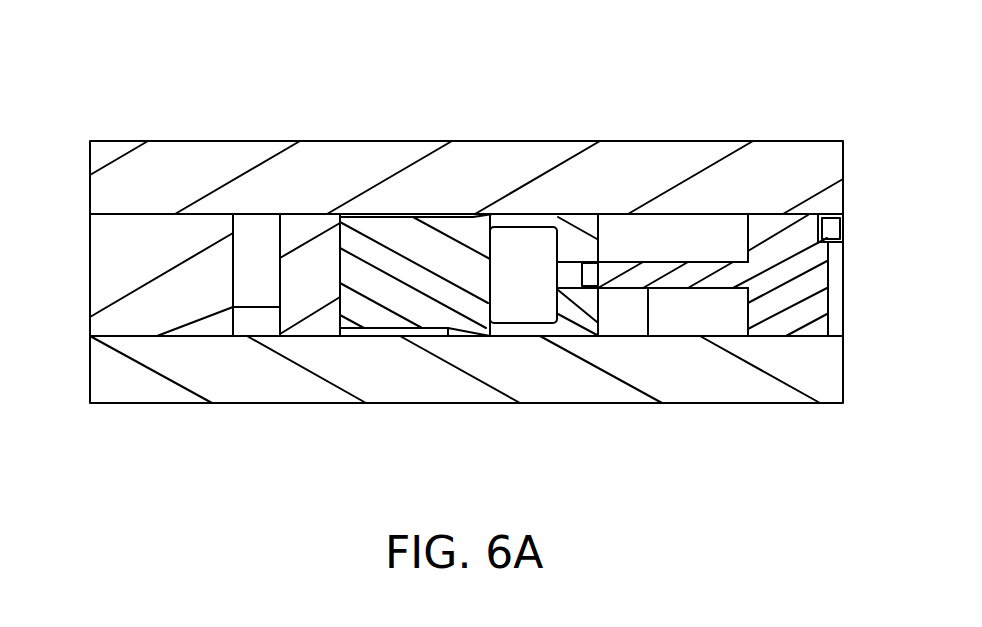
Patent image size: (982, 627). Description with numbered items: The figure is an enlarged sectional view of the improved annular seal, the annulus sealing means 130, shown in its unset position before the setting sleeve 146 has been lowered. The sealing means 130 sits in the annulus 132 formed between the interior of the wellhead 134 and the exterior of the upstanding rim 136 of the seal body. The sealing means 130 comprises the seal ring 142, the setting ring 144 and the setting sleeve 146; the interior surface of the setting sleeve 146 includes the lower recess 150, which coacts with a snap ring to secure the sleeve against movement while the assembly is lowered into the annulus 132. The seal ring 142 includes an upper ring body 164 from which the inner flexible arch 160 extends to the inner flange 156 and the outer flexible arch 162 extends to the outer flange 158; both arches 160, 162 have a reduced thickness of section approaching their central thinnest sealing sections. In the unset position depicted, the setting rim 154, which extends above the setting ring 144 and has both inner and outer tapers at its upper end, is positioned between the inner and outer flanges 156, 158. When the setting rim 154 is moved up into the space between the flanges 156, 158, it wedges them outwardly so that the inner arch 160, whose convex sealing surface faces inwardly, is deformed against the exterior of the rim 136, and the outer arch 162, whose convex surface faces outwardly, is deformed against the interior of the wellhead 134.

The annulus sealing means 130 is at (508, 39).
The annulus 132 is at (720, 240).
The wellhead 134 is at (98, 152).
The upstanding rim 136 is at (93, 398).
The seal ring 142 is at (362, 345).
The setting ring 144 is at (783, 327).
The setting sleeve 146 is at (130, 220).
The lower recess 150 is at (197, 312).
The setting rim 154 is at (640, 262).
The inner flange 156 is at (598, 291).
The outer flange 158 is at (599, 258).
The inner flexible arch 160 is at (537, 335).
The outer flexible arch 162 is at (493, 212).
The upper ring body 164 is at (352, 215).